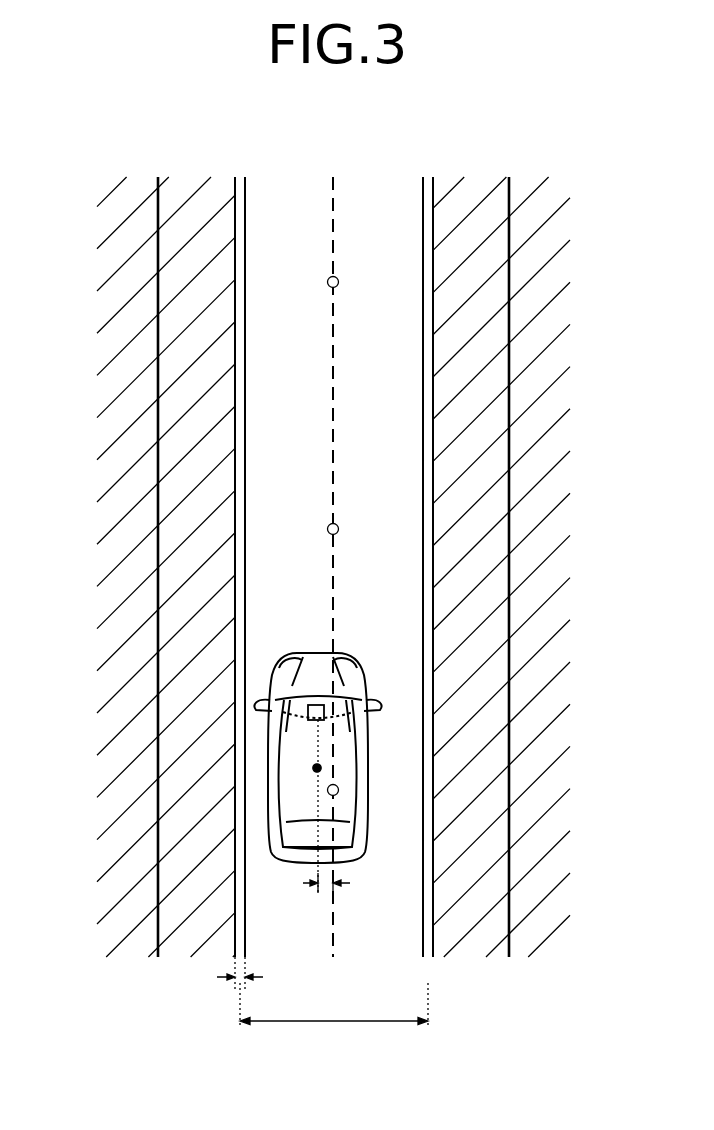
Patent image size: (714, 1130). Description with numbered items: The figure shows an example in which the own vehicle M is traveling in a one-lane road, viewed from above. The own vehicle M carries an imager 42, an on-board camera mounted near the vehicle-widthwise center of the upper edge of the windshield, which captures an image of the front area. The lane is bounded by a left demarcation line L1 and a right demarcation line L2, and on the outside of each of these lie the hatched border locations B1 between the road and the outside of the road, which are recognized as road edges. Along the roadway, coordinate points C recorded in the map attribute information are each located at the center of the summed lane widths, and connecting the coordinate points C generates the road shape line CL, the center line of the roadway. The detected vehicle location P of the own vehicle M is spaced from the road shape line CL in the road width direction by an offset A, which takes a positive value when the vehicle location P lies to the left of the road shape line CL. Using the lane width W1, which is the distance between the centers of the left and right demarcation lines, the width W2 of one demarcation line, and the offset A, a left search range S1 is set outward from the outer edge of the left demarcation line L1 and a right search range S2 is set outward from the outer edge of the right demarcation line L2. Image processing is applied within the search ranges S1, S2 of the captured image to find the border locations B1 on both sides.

The border location B1 is at (158, 197).
The left demarcation line L1 is at (245, 205).
The right demarcation line L2 is at (423, 205).
The road shape line CL is at (333, 198).
The left search range S1 is at (246, 398).
The right search range S2 is at (422, 398).
The coordinate point C is at (339, 282).
The own vehicle M is at (270, 800).
The imager 42 is at (308, 709).
The vehicle location P is at (320, 766).
The offset A is at (333, 897).
The lane width W1 is at (334, 1017).
The width of demarcation line W2 is at (242, 975).